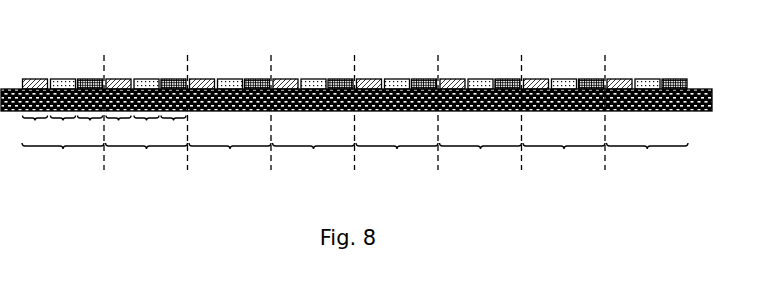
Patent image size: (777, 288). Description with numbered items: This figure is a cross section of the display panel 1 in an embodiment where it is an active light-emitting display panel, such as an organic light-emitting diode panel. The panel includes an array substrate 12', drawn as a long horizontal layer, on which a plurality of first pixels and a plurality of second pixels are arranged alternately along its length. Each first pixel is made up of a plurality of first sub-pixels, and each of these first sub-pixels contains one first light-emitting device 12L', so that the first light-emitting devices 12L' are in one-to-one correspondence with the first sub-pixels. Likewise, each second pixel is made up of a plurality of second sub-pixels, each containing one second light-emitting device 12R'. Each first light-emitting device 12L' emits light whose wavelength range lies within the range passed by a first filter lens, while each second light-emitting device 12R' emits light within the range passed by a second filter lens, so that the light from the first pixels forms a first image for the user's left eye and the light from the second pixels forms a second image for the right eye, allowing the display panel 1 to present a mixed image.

The display panel 1 is at (640, 32).
The array substrate 12' is at (372, 114).
The first light-emitting device 12L' is at (63, 58).
The second light-emitting device 12R' is at (146, 58).